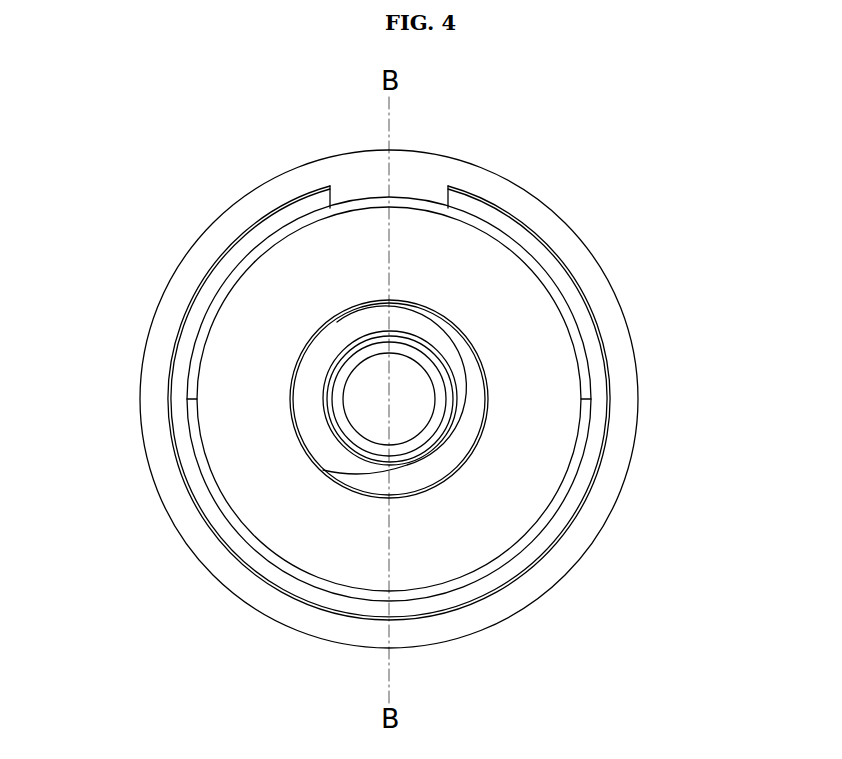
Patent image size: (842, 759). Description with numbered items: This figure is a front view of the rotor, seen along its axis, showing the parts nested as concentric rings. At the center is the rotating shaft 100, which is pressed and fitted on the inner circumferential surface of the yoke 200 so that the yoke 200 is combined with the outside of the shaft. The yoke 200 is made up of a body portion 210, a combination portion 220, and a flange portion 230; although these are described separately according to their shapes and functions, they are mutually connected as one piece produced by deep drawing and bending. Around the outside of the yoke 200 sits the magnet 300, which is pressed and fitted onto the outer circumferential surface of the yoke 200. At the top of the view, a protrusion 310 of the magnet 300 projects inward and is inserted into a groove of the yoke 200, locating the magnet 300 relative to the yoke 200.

The rotating shaft 100 is at (363, 402).
The yoke 200 is at (471, 403).
The body portion 210 is at (543, 433).
The combination portion 220 is at (455, 428).
The flange portion 230 is at (598, 399).
The magnet 300 is at (565, 580).
The protrusion 310 is at (412, 190).